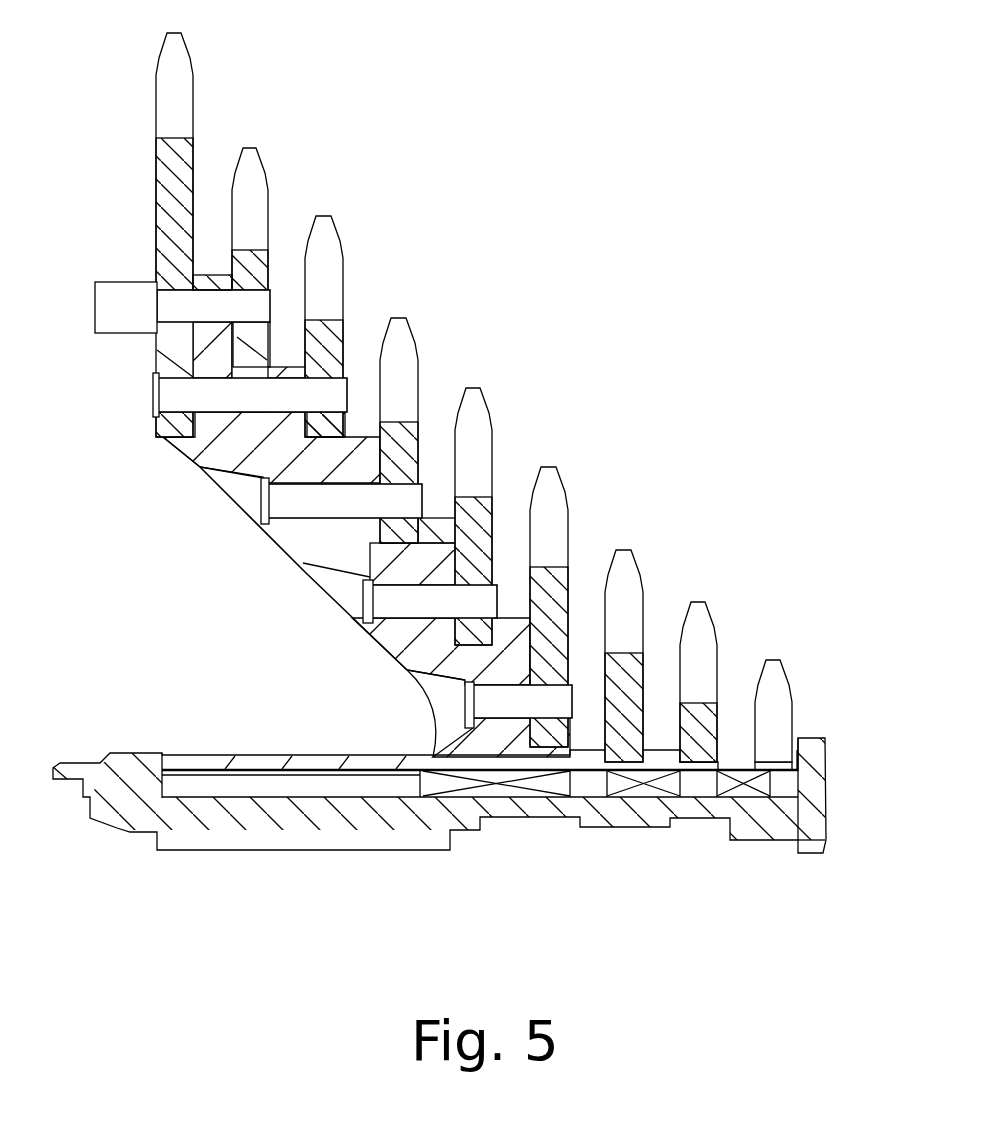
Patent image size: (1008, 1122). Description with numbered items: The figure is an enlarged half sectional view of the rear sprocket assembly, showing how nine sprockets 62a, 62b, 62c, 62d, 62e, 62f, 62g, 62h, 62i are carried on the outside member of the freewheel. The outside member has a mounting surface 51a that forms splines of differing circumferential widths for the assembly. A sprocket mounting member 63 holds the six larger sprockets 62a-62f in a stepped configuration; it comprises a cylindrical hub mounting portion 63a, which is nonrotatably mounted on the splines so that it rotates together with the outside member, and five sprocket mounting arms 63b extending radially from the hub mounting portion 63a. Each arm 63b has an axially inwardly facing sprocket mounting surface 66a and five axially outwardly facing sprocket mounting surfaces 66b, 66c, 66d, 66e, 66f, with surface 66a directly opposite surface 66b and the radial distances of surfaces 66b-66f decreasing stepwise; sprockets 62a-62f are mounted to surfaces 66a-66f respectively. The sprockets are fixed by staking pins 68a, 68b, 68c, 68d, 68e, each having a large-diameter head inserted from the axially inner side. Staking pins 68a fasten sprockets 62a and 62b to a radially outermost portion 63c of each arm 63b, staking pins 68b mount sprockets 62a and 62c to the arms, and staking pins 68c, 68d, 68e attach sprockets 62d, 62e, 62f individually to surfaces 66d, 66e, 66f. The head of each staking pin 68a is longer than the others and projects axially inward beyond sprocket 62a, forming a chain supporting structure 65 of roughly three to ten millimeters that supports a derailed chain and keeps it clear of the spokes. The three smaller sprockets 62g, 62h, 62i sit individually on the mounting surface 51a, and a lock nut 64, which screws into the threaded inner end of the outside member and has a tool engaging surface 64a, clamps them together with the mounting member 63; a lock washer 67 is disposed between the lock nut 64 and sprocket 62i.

The mounting surface 51a is at (252, 793).
The sprocket 62a is at (180, 72).
The sprocket 62b is at (258, 163).
The sprocket 62c is at (332, 255).
The sprocket 62d is at (403, 343).
The sprocket 62e is at (480, 416).
The sprocket 62f is at (555, 495).
The sprocket 62g is at (635, 577).
The sprocket 62h is at (705, 630).
The sprocket 62i is at (778, 688).
The sprocket mounting member 63 is at (287, 533).
The hub mounting portion 63a is at (367, 757).
The sprocket mounting arm 63b is at (200, 467).
The radially outermost portion 63c is at (218, 272).
The lock nut 64 is at (812, 760).
The tool engaging surface 64a is at (812, 852).
The chain supporting structure 65 is at (105, 333).
The sprocket mounting surface 66a is at (193, 368).
The sprocket mounting surface 66b is at (276, 342).
The sprocket mounting surface 66c is at (327, 420).
The sprocket mounting surface 66d is at (385, 540).
The sprocket mounting surface 66e is at (502, 578).
The sprocket mounting surface 66f is at (570, 653).
The lock washer 67 is at (797, 750).
The staking pin 68a is at (157, 292).
The staking pin 68b is at (268, 410).
The staking pin 68c is at (330, 507).
The staking pin 68d is at (433, 607).
The staking pin 68e is at (512, 705).